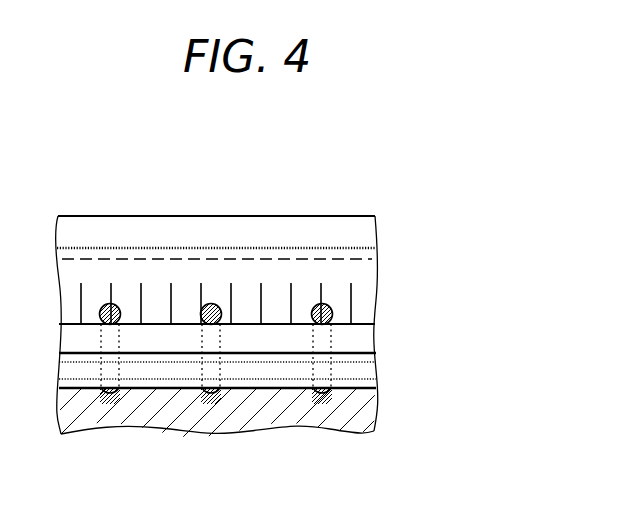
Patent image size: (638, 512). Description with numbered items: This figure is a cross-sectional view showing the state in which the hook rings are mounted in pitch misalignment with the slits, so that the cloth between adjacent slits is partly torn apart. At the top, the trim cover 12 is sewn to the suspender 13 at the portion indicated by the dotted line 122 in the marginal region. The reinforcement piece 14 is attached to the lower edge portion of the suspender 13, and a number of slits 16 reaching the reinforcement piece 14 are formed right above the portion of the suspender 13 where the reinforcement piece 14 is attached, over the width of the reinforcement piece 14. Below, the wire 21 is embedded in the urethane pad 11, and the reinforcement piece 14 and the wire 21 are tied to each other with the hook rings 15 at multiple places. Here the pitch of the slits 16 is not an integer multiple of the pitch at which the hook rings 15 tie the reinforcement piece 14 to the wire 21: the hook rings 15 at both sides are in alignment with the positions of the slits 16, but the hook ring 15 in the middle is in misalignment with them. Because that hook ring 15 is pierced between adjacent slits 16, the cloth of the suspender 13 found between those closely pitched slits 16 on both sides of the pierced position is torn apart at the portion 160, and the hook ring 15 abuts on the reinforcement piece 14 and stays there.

The urethane pad 11 is at (360, 412).
The trim cover 12 is at (358, 232).
The dotted line 122 is at (322, 259).
The suspender 13 is at (362, 282).
The reinforcement piece 14 is at (363, 331).
The hook rings 15 is at (357, 334).
The slits 16 is at (357, 299).
The torn portion 160 is at (230, 306).
The wire 21 is at (363, 370).